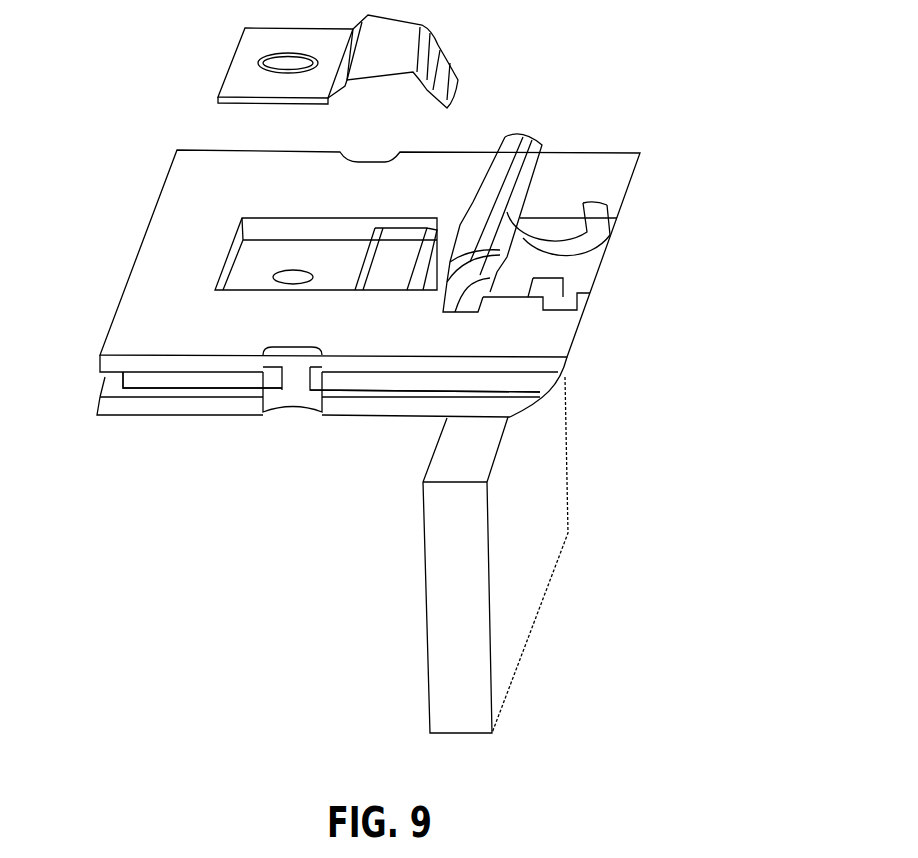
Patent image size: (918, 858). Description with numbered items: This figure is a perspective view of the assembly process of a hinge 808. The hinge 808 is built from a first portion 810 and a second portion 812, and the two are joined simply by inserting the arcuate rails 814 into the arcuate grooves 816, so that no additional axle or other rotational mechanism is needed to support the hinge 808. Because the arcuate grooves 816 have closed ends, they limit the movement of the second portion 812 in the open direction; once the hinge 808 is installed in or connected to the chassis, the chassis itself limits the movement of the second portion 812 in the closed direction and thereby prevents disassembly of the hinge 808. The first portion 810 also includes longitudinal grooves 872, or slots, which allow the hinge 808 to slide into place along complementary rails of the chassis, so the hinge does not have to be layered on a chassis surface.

The hinge 808 is at (700, 73).
The first portion 810 is at (183, 190).
The second portion 812 is at (525, 480).
The arcuate rails 814 is at (480, 275).
The arcuate grooves 816 is at (590, 207).
The longitudinal grooves 872 is at (178, 380).